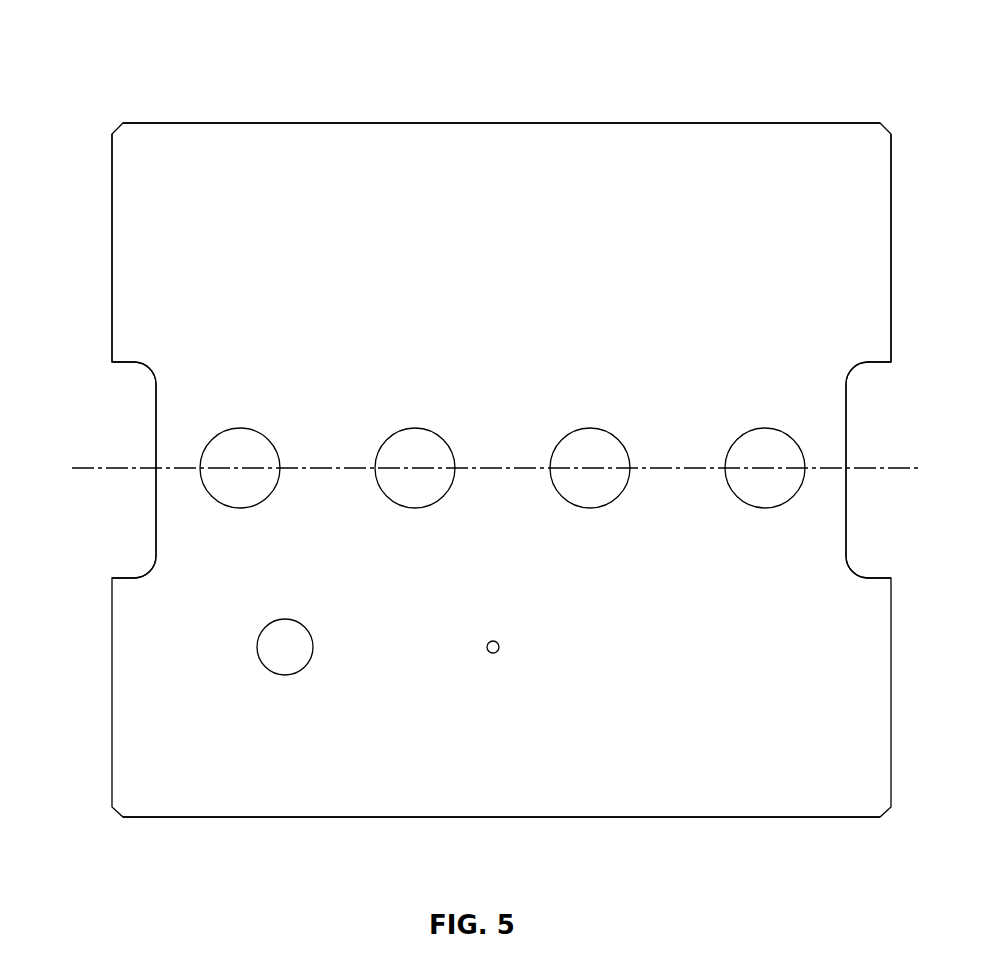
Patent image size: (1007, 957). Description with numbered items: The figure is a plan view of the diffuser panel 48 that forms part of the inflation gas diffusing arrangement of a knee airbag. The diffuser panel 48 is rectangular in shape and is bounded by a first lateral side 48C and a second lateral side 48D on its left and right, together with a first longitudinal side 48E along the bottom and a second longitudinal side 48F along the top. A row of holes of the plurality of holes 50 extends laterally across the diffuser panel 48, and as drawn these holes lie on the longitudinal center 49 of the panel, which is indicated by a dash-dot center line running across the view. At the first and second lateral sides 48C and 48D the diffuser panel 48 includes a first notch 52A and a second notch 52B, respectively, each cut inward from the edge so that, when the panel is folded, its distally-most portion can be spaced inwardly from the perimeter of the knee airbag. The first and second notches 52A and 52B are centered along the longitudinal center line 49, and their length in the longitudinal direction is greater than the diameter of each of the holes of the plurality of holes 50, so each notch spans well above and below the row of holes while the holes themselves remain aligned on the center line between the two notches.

The diffuser panel 48 is at (815, 52).
The first lateral side 48C is at (112, 203).
The second lateral side 48D is at (891, 260).
The first longitudinal side 48E is at (262, 817).
The second longitudinal side 48F is at (312, 123).
The longitudinal center line 49 is at (493, 468).
The plurality of holes 50 is at (202, 482).
The first notch 52A is at (156, 430).
The second notch 52B is at (846, 453).